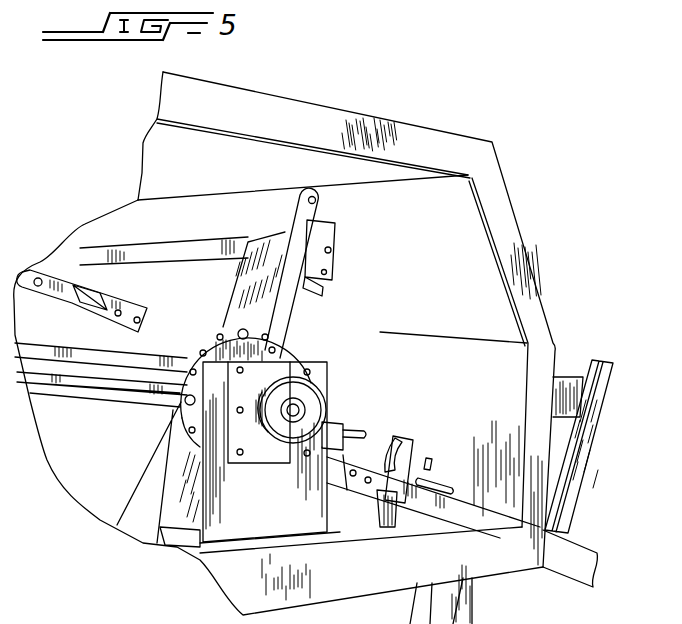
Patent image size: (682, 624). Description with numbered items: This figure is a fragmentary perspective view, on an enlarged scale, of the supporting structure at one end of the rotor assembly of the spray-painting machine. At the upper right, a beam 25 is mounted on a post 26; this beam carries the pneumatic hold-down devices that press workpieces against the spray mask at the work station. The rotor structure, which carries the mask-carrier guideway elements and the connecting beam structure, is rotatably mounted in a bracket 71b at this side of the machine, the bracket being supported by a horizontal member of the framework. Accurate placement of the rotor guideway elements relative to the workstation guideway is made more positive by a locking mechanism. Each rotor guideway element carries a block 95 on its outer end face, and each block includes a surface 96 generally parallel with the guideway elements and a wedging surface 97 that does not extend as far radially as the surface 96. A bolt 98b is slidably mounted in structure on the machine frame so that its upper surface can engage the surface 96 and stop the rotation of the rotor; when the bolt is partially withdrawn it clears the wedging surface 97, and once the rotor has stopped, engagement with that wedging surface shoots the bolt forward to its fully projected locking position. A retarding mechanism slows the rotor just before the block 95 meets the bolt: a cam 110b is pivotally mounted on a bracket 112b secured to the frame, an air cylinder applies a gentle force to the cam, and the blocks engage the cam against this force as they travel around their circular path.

The beam 25 is at (565, 380).
The post 26 is at (572, 500).
The bracket 71b is at (274, 507).
The block 95 is at (324, 286).
The surface 96 is at (340, 227).
The wedging surface 97 is at (340, 238).
The bolt 98b is at (378, 482).
The cam 110b is at (383, 463).
The bracket 112b is at (410, 455).